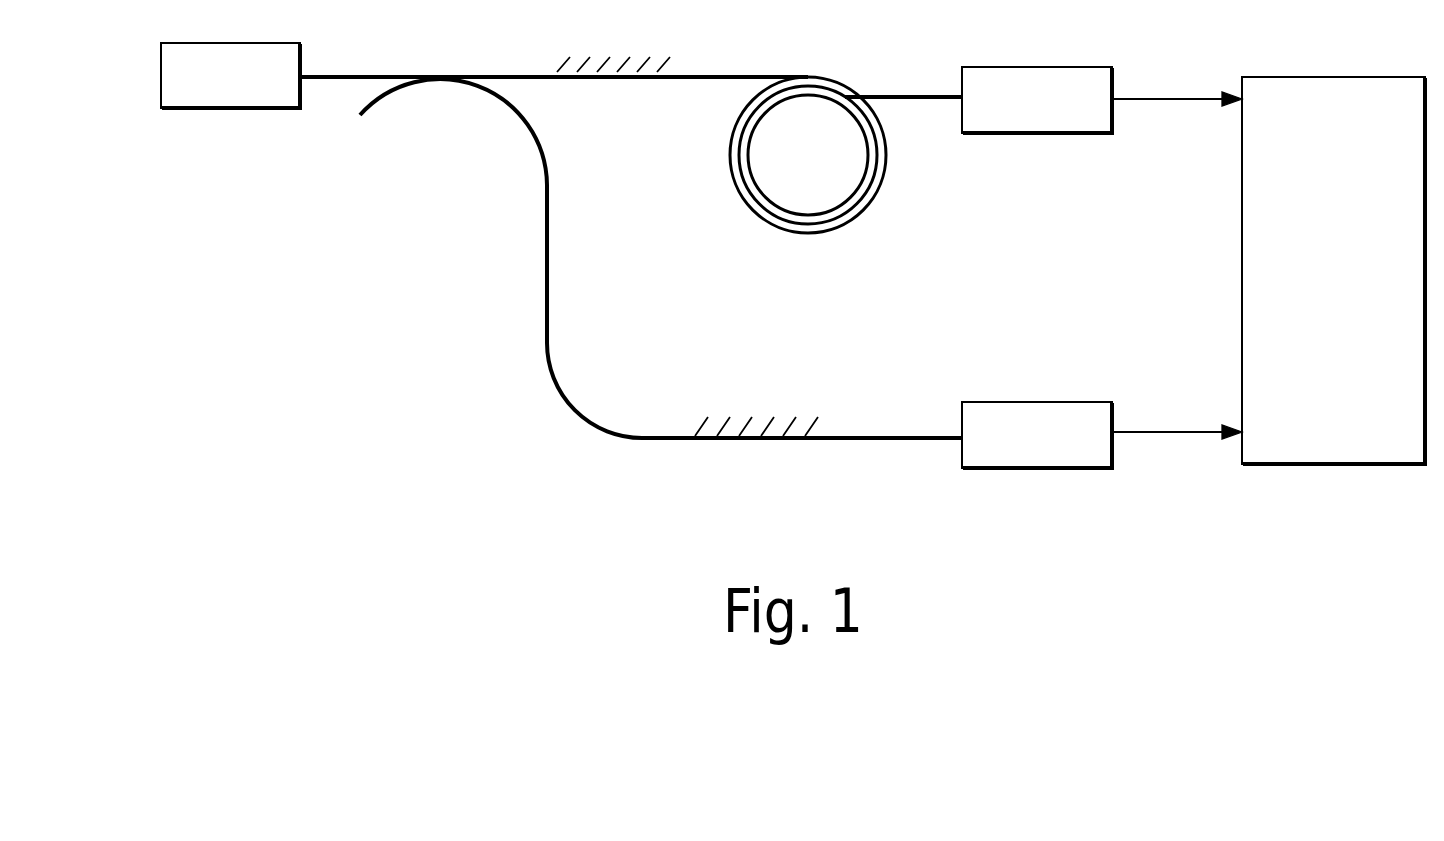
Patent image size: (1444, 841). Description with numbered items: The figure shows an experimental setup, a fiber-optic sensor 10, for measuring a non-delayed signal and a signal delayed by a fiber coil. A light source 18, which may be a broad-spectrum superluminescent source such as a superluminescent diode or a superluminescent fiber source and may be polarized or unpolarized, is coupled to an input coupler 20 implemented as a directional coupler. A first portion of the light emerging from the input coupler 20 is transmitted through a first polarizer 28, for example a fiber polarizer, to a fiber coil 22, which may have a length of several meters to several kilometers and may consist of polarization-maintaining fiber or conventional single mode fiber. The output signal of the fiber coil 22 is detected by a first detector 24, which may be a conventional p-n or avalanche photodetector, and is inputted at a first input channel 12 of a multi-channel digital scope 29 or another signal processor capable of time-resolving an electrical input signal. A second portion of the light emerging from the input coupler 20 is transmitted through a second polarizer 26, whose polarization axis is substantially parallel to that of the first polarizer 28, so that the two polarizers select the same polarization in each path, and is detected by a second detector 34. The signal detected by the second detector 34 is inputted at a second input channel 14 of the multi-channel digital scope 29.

The fiber-optic sensor 10 is at (455, 367).
The first input channel 12 is at (1152, 99).
The second input channel 14 is at (1192, 435).
The light source 18 is at (229, 109).
The input coupler 20 is at (430, 76).
The fiber coil 22 is at (878, 117).
The first detector 24 is at (1067, 66).
The second polarizer 26 is at (748, 440).
The first polarizer 28 is at (622, 80).
The multi-channel digital scope 29 is at (1337, 466).
The second detector 34 is at (1058, 402).